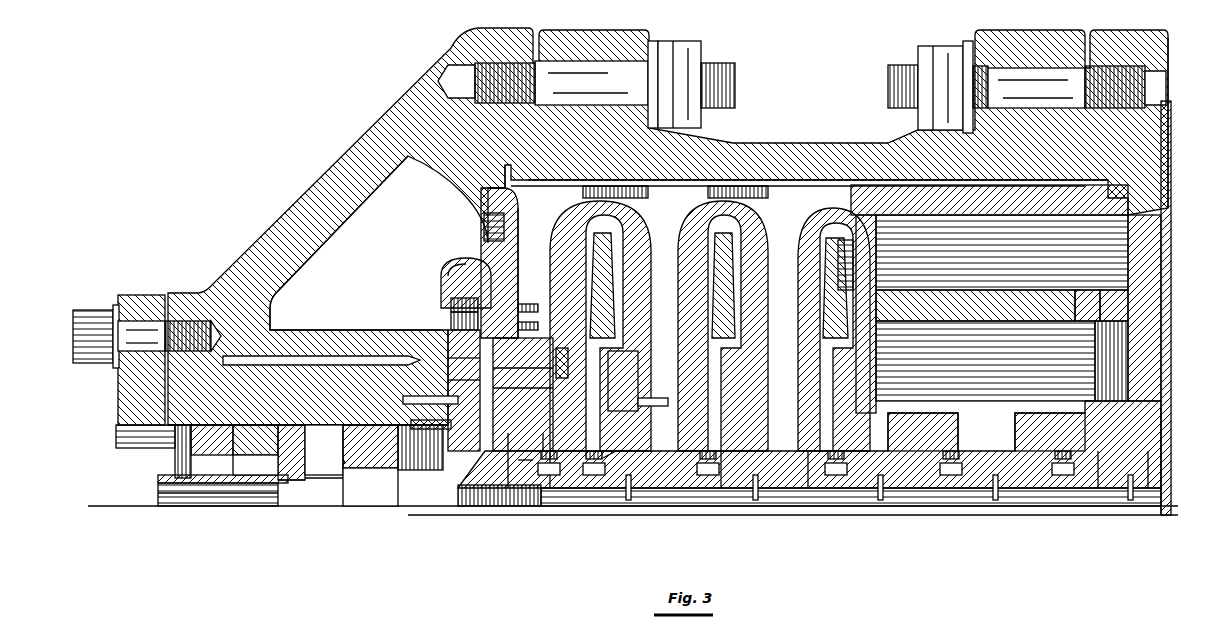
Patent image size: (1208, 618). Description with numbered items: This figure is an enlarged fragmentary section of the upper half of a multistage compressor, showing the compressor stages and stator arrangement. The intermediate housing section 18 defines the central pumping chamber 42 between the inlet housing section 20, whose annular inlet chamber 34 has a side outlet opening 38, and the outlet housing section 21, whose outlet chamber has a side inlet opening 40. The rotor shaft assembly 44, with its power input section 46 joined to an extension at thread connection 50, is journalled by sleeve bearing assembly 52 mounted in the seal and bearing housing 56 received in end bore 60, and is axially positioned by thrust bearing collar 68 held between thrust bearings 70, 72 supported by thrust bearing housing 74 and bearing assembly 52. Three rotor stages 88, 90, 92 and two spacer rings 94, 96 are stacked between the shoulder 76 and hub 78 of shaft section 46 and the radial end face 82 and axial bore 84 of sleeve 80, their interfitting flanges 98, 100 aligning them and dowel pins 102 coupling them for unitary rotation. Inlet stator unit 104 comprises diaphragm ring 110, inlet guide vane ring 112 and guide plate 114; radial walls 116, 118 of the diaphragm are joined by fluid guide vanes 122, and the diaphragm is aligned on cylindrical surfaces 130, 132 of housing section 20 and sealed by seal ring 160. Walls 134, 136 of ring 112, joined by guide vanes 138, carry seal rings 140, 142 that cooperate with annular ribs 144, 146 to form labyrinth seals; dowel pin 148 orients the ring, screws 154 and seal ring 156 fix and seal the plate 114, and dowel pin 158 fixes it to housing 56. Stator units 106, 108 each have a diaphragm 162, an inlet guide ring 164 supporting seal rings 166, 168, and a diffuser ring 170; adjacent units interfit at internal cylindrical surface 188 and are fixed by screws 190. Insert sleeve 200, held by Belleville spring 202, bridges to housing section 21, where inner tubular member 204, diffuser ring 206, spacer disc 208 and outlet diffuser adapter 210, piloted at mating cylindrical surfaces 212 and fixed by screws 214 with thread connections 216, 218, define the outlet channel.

The intermediate housing section 18 is at (818, 150).
The inlet housing section 20 is at (380, 108).
The outlet housing section 21 is at (1148, 118).
The inlet chamber 34 is at (372, 248).
The side outlet opening 38 is at (472, 210).
The side inlet opening 40 is at (1156, 222).
The central pumping chamber 42 is at (720, 168).
The rotor shaft assembly 44 is at (690, 500).
The power input section 46 is at (372, 490).
The thread connection 50 is at (488, 492).
The sleeve bearing assembly 52 is at (318, 425).
The seal and bearing housing 56 is at (282, 394).
The end bore 60 is at (332, 348).
The thrust bearing collar 68 is at (291, 493).
The thrust bearing 70 is at (272, 478).
The thrust bearing 72 is at (610, 270).
The thrust bearing housing 74 is at (232, 452).
The shoulder 76 is at (512, 452).
The hub 78 is at (505, 492).
The sleeve 80 is at (1156, 470).
The radial end face 82 is at (1095, 492).
The axial bore 84 is at (1142, 492).
The rotor stage 88 is at (565, 492).
The rotor stage 90 is at (712, 492).
The rotor stage 92 is at (800, 492).
The spacer ring 94 is at (918, 470).
The spacer ring 96 is at (1030, 470).
The flange 98 is at (545, 441).
The flange 100 is at (620, 495).
The dowel pin 102 is at (1060, 462).
The inlet stator unit 104 is at (527, 215).
The stator unit 106 is at (652, 215).
The stator unit 108 is at (780, 215).
The diaphragm ring 110 is at (476, 222).
The inlet guide vane ring 112 is at (470, 372).
The guide plate 114 is at (470, 352).
The radial wall 116 is at (515, 318).
The radial wall 118 is at (515, 300).
The fluid guide vane 122 is at (494, 275).
The cylindrical surface 130 is at (484, 176).
The cylindrical surface 132 is at (438, 268).
The wall 134 is at (523, 369).
The wall 136 is at (525, 350).
The guide vane 138 is at (510, 388).
The seal ring 140 is at (507, 433).
The seal ring 142 is at (556, 360).
The annular rib 144 is at (462, 428).
The annular rib 146 is at (539, 433).
The dowel pin 148 is at (462, 340).
The screw 154 is at (466, 273).
The seal ring 156 is at (443, 314).
The dowel pin 158 is at (398, 390).
The seal ring 160 is at (443, 297).
The diaphragm 162 is at (645, 258).
The inlet guide ring 164 is at (630, 386).
The seal ring 166 is at (598, 450).
The seal ring 168 is at (630, 395).
The diffuser ring 170 is at (592, 256).
The internal cylindrical surface 188 is at (605, 178).
The screw 190 is at (640, 178).
The insert sleeve 200 is at (955, 212).
The Belleville spring 202 is at (1100, 178).
The inner tubular member 204 is at (932, 296).
The diffuser ring 206 is at (862, 256).
The spacer disc 208 is at (852, 370).
The outlet diffuser adapter 210 is at (1100, 282).
The mating cylindrical surfaces 212 is at (1154, 286).
The screw 214 is at (1090, 330).
The thread connection 216 is at (1070, 284).
The thread connection 218 is at (848, 262).